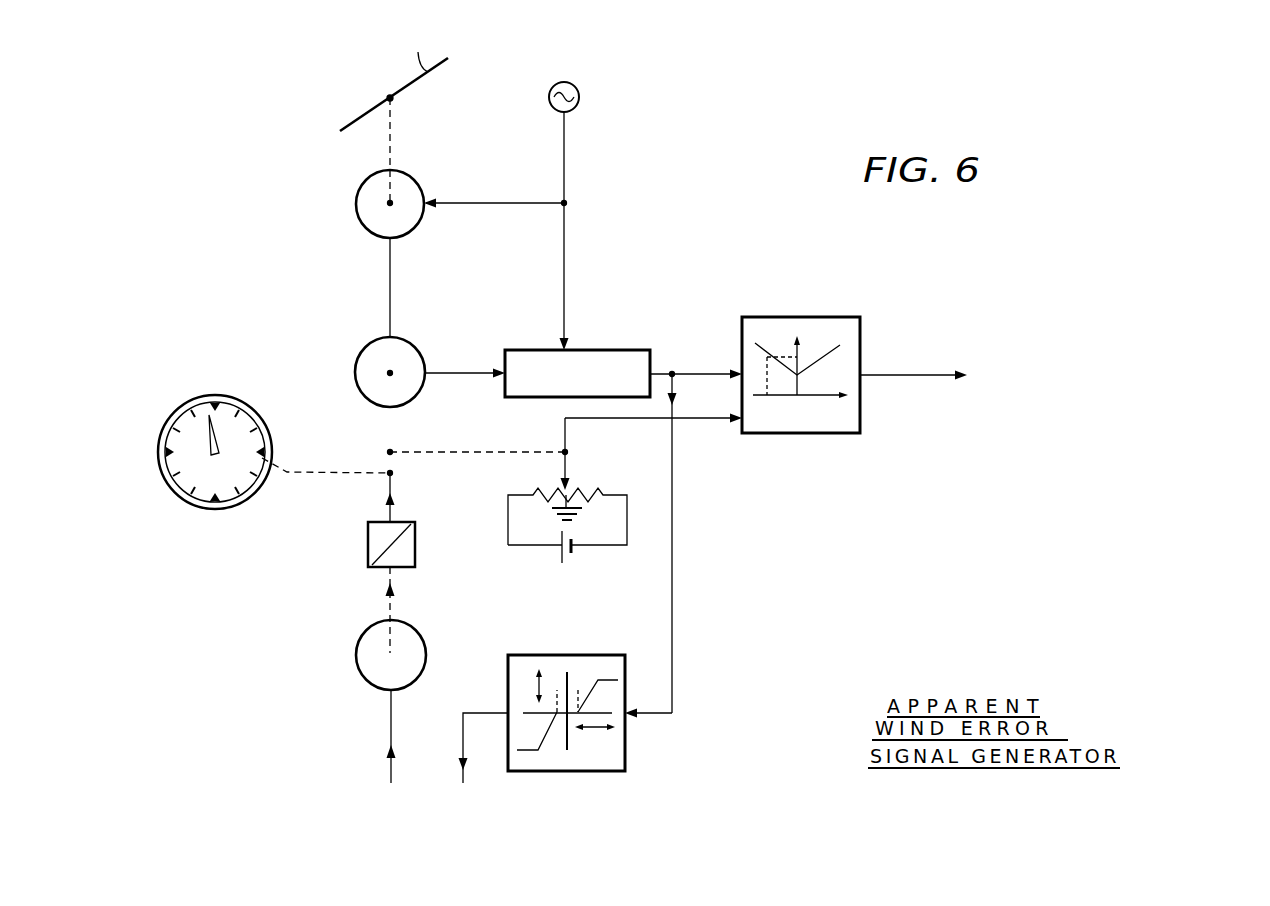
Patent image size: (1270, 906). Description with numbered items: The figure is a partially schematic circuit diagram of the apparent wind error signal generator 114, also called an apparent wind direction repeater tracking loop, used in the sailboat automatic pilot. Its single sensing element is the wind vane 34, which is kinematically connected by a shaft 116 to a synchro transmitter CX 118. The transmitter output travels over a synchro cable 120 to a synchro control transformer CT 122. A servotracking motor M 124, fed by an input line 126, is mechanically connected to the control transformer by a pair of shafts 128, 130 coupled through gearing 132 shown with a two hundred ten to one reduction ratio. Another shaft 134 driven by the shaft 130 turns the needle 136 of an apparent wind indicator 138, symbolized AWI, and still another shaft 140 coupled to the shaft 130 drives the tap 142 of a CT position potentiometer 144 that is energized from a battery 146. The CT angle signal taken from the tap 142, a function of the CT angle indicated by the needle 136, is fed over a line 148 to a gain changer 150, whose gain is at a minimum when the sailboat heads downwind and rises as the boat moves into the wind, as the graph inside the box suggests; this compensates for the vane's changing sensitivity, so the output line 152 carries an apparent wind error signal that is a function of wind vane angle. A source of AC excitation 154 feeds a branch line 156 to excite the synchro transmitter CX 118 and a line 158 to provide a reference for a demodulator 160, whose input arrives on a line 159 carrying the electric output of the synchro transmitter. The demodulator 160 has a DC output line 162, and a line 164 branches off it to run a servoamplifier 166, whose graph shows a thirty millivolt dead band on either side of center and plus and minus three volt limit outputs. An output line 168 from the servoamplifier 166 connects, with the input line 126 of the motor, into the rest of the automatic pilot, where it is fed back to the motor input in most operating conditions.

The wind vane 34 is at (357, 119).
The apparent wind error signal generator 114 is at (612, 315).
The shaft 116 is at (392, 123).
The synchro transmitter CX 118 is at (416, 180).
The synchro cable 120 is at (391, 295).
The synchro control transformer CT 122 is at (418, 352).
The servotracking motor M 124 is at (426, 642).
The input line 126 is at (392, 713).
The shaft 128 is at (391, 605).
The shaft 130 is at (386, 494).
The gearing 132 is at (415, 545).
The shaft 134 is at (318, 476).
The needle 136 is at (219, 424).
The apparent wind indicator 138 is at (186, 406).
The shaft 140 is at (464, 452).
The tap 142 is at (567, 466).
The CT position potentiometer 144 is at (627, 530).
The battery 146 is at (563, 563).
The line 148 is at (694, 422).
The gain changer 150 is at (860, 333).
The output line 152 is at (909, 373).
The source of AC excitation 154 is at (578, 102).
The branch line 156 is at (522, 200).
The line 158 is at (565, 270).
The line 159 is at (458, 378).
The demodulator 160 is at (597, 350).
The DC output line 162 is at (719, 372).
The line 164 is at (674, 650).
The servoamplifier 166 is at (607, 636).
The output line 168 is at (490, 702).